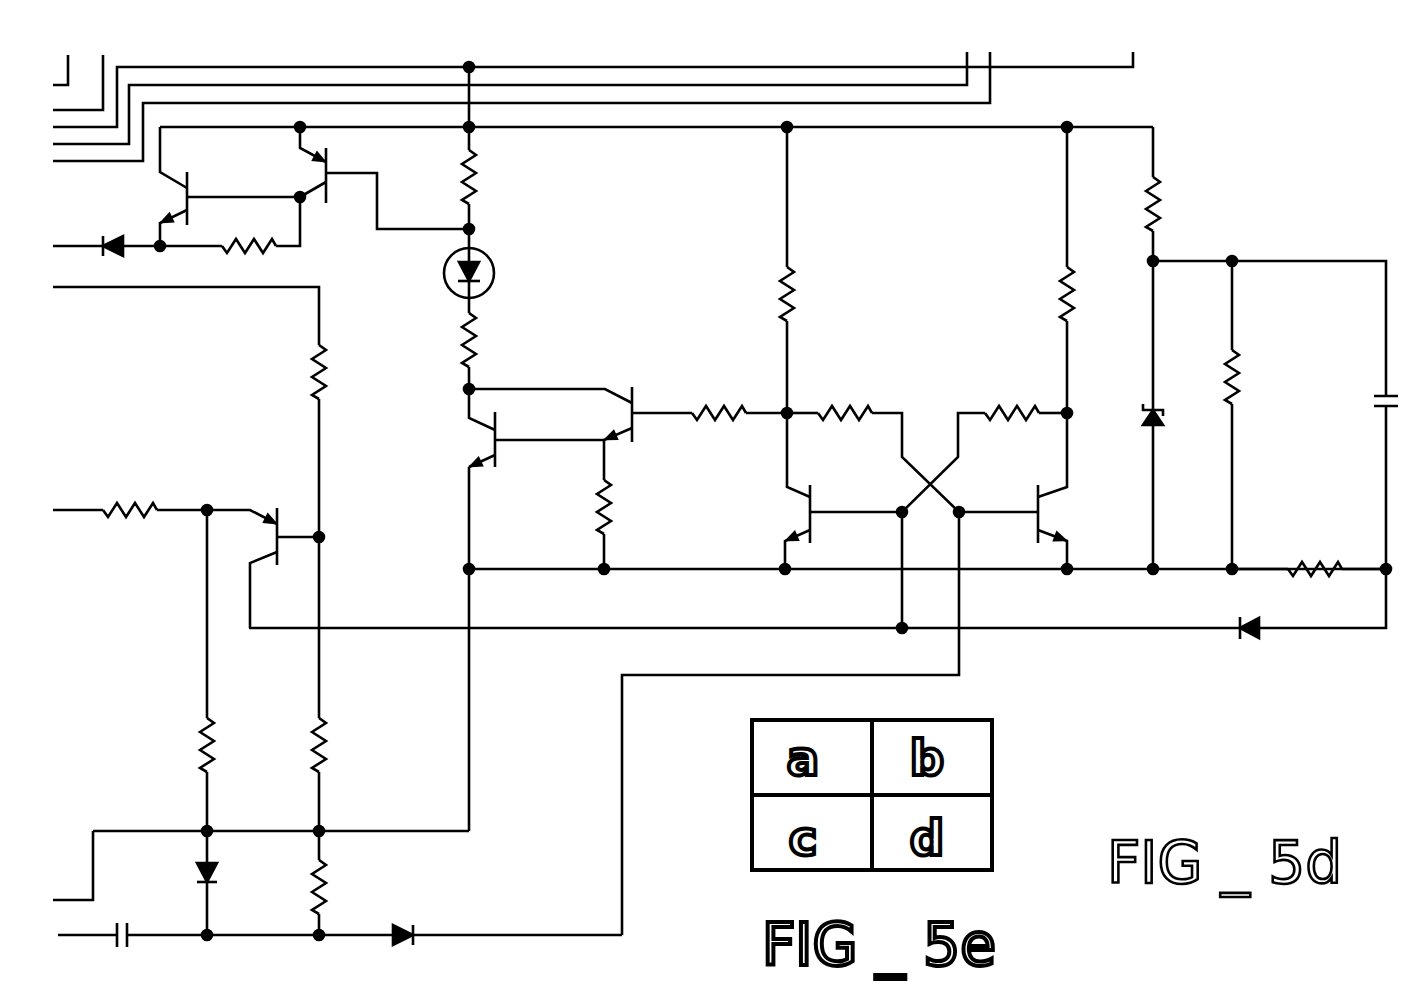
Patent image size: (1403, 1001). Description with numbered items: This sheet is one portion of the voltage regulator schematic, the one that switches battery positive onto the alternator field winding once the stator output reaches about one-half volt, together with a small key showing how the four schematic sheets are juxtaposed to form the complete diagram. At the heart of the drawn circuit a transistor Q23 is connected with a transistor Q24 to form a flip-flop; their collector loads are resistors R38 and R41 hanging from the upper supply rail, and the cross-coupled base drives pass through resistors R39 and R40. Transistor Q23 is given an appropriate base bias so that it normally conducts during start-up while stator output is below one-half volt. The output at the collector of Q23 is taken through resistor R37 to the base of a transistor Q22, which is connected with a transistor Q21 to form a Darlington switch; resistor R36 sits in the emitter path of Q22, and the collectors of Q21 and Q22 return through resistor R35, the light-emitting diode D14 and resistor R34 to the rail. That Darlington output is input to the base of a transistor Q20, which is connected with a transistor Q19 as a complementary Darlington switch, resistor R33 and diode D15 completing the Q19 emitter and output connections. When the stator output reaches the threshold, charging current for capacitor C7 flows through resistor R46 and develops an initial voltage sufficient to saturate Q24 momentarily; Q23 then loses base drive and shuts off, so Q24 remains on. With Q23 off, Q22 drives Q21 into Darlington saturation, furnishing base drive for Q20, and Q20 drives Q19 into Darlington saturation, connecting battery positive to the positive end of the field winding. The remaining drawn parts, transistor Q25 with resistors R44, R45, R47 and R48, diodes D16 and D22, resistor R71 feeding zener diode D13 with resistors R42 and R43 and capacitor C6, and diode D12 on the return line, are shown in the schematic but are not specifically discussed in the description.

The transistor Q19 is at (195, 186).
The transistor Q20 is at (384, 178).
The transistor Q21 is at (497, 428).
The transistor Q22 is at (580, 415).
The transistor Q23 is at (808, 491).
The transistor Q24 is at (1042, 491).
The transistor Q25 is at (263, 548).
The resistor R33 is at (232, 222).
The resistor R34 is at (506, 165).
The resistor R35 is at (435, 340).
The resistor R36 is at (639, 524).
The resistor R37 is at (720, 434).
The resistor R38 is at (749, 270).
The resistor R39 is at (873, 438).
The resistor R40 is at (984, 438).
The resistor R41 is at (1029, 270).
The resistor R42 is at (1268, 415).
The resistor R43 is at (1309, 549).
The resistor R44 is at (284, 372).
The resistor R45 is at (355, 745).
The resistor R46 is at (352, 887).
The resistor R47 is at (163, 745).
The resistor R48 is at (130, 484).
The resistor R71 is at (1193, 194).
The diode D12 is at (1276, 649).
The zener diode D13 is at (1125, 415).
The light emitting diode D14 is at (501, 277).
The diode D15 is at (109, 228).
The diode D16 is at (238, 882).
The diode D22 is at (440, 919).
The capacitor C6 is at (1366, 421).
The capacitor C7 is at (124, 909).